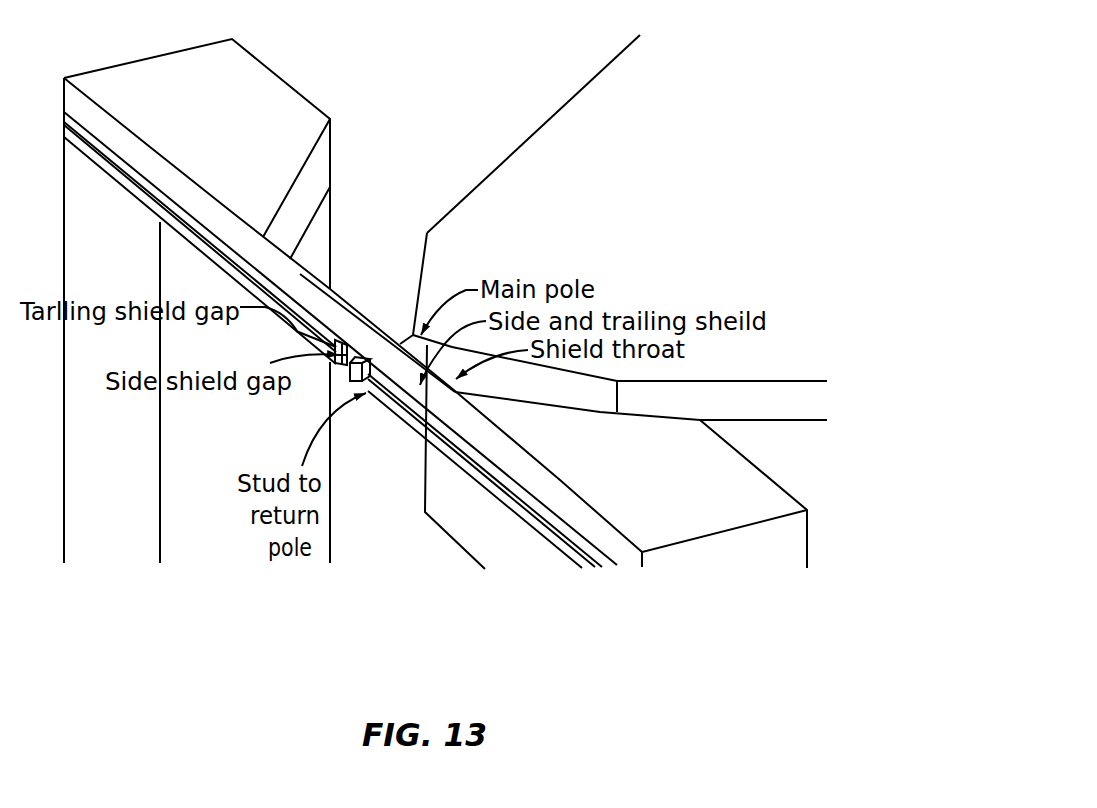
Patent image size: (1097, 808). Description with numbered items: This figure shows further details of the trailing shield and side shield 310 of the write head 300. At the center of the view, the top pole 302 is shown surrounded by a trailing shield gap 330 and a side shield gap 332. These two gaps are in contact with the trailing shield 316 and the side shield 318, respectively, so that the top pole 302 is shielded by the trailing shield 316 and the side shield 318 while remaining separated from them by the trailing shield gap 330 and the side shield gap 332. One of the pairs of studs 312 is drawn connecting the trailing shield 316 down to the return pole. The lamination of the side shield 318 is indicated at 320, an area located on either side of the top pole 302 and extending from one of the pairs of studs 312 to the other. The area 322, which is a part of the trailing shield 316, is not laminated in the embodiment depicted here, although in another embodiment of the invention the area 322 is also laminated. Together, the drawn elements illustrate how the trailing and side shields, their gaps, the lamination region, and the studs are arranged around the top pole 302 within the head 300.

The perpendicular magnetic write head 300 is at (706, 164).
The top pole 302 is at (350, 375).
The trailing shield and side shield 310 is at (236, 206).
The pairs of studs 312 is at (183, 532).
The trailing shield 316 is at (380, 344).
The side shield 318 is at (296, 331).
The lamination of the side shield 320 is at (559, 513).
The area 322 is at (210, 226).
The trailing shield gap 330 is at (218, 339).
The side shield gap 332 is at (273, 386).